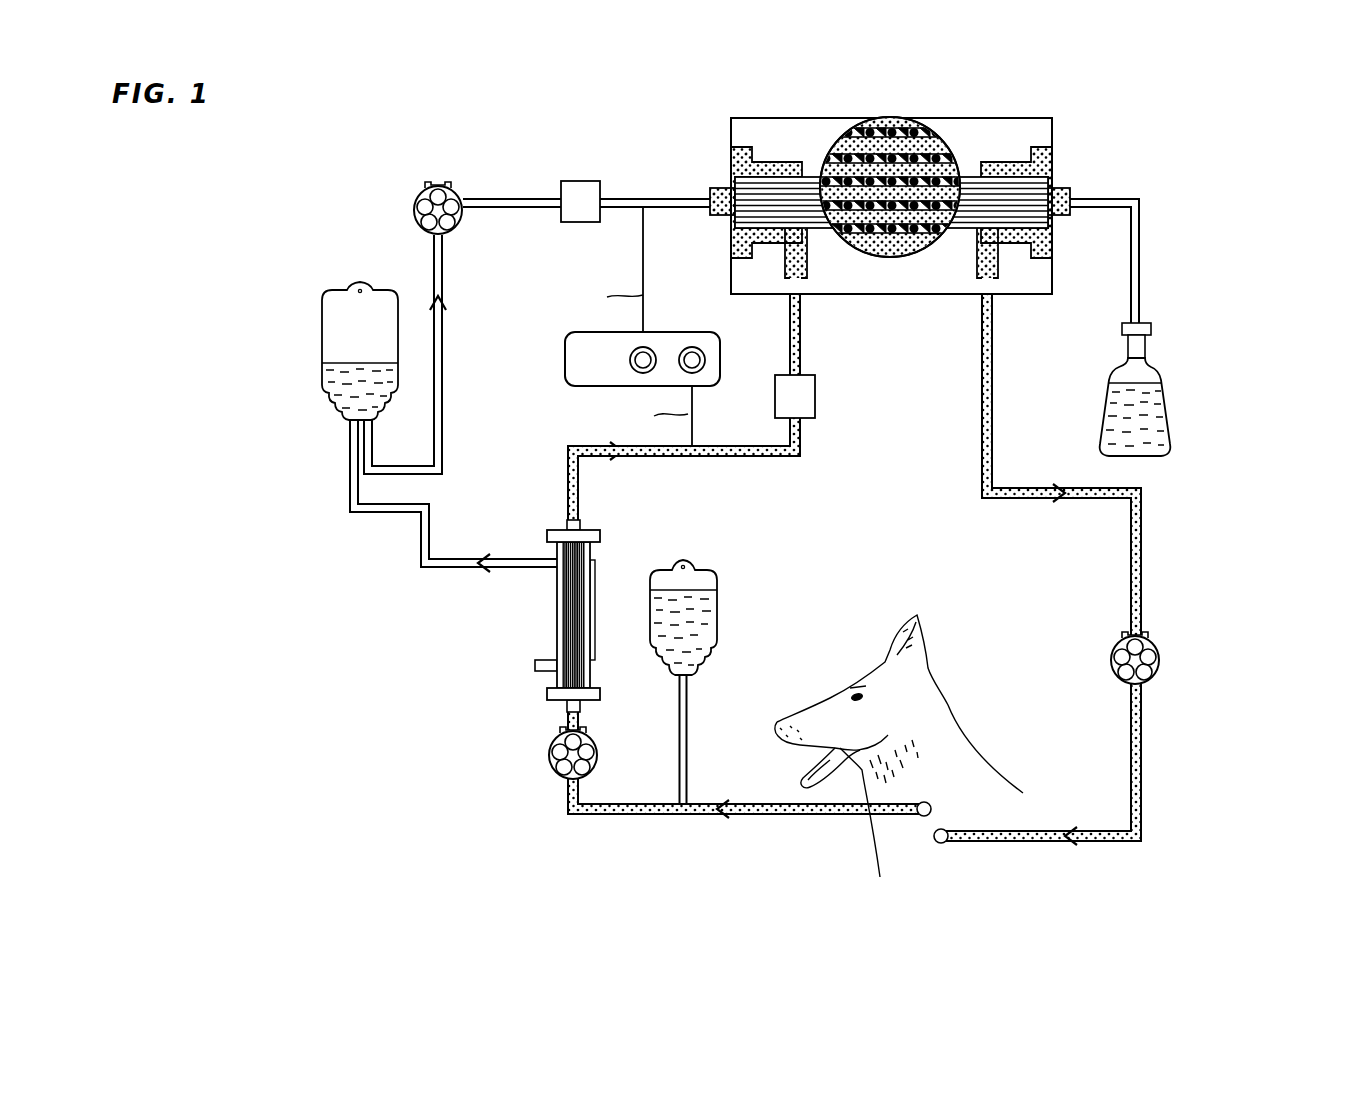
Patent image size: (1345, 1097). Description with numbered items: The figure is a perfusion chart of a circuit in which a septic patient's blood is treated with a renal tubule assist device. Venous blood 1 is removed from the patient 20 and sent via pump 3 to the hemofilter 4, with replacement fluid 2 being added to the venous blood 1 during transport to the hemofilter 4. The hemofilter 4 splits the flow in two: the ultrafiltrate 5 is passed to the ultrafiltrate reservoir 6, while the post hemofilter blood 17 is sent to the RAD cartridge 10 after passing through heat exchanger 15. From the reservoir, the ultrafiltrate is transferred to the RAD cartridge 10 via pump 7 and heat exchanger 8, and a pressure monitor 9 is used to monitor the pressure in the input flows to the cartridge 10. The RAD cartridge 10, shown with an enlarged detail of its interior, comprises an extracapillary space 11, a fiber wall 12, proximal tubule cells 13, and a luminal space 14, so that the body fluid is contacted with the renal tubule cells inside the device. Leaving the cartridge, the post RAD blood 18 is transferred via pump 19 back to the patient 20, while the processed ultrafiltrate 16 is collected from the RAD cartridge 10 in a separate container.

The venous blood 1 is at (773, 816).
The replacement fluid 2 is at (717, 616).
The pump 3 is at (550, 758).
The hemofilter 4 is at (556, 610).
The ultrafiltrate 5 is at (420, 540).
The ultrafiltrate reservoir 6 is at (322, 350).
The pump 7 is at (413, 212).
The heat exchanger 8 is at (580, 181).
The pressure monitor 9 is at (565, 358).
The RAD cartridge 10 is at (878, 296).
The extracapillary space 11 is at (885, 143).
The fiber wall 12 is at (897, 155).
The proximal tubule cells 13 is at (905, 165).
The luminal space 14 is at (937, 170).
The heat exchanger 15 is at (815, 400).
The processed ultrafiltrate 16 is at (1172, 407).
The post hemofilter blood 17 is at (712, 483).
The post RAD blood 18 is at (1053, 497).
The pump 19 is at (1160, 665).
The patient 20 is at (975, 762).